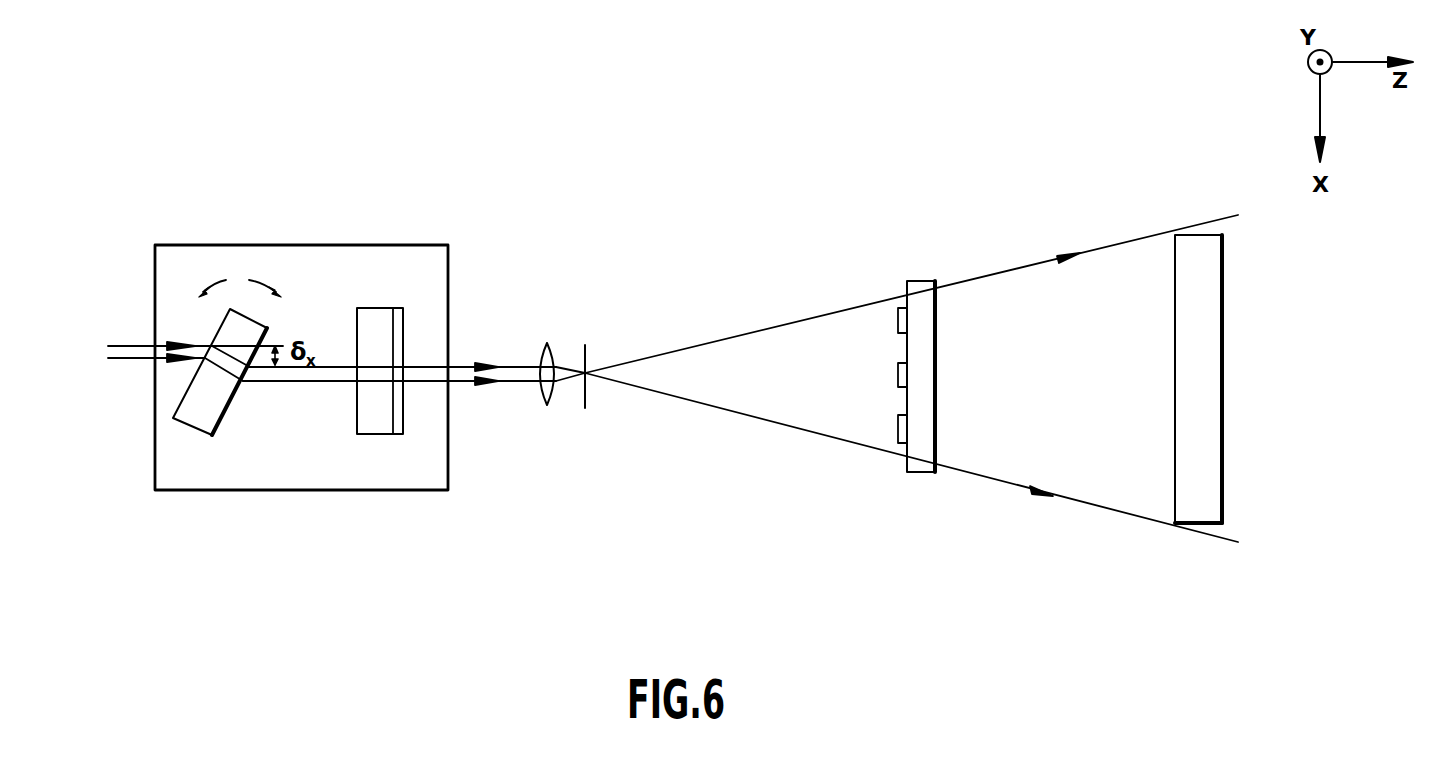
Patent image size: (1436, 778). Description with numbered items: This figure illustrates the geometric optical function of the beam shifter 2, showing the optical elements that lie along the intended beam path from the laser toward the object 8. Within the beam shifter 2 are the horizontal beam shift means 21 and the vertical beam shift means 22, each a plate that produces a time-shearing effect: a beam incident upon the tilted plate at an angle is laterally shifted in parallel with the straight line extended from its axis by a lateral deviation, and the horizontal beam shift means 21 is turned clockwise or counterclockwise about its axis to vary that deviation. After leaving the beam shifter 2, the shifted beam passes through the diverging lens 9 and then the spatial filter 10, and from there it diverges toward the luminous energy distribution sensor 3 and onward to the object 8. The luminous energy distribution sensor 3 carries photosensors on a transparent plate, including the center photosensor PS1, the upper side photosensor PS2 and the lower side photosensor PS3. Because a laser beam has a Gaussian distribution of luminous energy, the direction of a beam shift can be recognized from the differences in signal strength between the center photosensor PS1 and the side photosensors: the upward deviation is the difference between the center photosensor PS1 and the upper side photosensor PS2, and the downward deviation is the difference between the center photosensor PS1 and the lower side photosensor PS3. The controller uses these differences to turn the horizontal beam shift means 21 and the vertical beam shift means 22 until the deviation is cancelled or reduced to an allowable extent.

The beam shifter 2 is at (432, 562).
The horizontal beam shift means 21 is at (200, 423).
The vertical beam shift means 22 is at (383, 423).
The diverging lens 9 is at (547, 405).
The spatial filter 10 is at (584, 350).
The luminous energy distribution sensor 3 is at (898, 382).
The center photosensor PS1 is at (898, 375).
The upper side photosensor PS2 is at (898, 315).
The lower side photosensor PS3 is at (900, 437).
The object 8 is at (1223, 435).